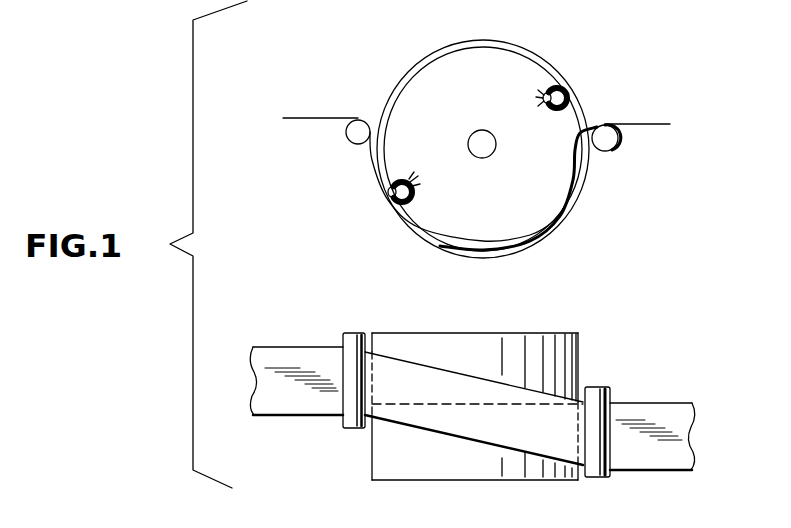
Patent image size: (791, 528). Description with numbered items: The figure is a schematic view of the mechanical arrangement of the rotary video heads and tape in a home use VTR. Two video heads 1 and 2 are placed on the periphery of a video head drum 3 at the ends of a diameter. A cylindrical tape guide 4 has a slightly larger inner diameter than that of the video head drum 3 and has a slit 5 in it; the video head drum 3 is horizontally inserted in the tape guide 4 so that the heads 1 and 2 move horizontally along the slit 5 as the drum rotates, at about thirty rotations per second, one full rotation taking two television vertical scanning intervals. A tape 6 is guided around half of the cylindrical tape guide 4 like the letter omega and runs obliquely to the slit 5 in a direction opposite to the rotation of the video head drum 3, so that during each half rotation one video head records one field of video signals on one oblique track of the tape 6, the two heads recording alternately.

The video head 1 is at (551, 81).
The video head 2 is at (395, 194).
The video head drum 3 is at (514, 68).
The tape guide 4 is at (402, 82).
The slit 5 is at (478, 400).
The tape 6 is at (625, 123).